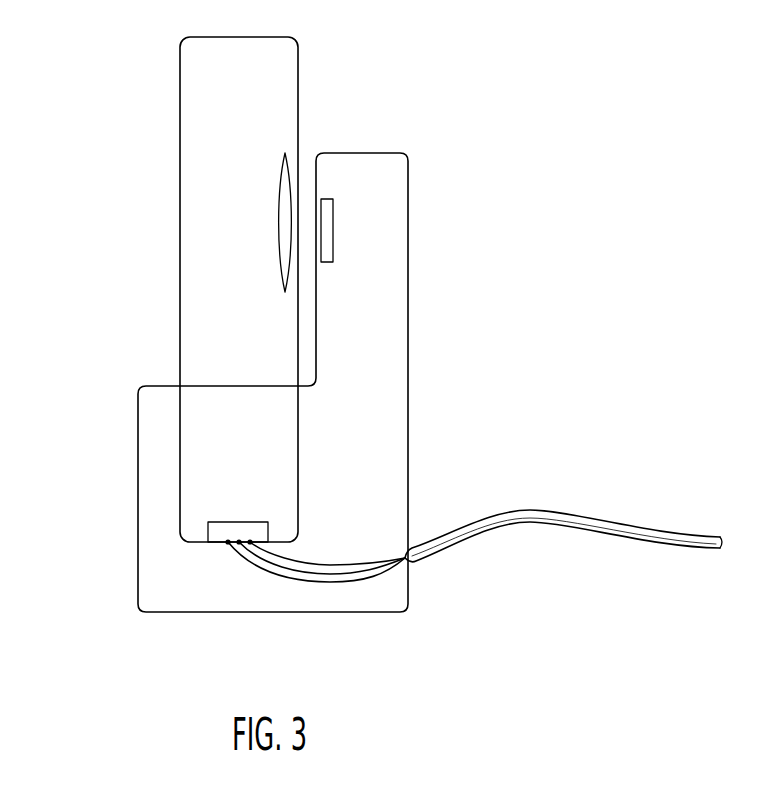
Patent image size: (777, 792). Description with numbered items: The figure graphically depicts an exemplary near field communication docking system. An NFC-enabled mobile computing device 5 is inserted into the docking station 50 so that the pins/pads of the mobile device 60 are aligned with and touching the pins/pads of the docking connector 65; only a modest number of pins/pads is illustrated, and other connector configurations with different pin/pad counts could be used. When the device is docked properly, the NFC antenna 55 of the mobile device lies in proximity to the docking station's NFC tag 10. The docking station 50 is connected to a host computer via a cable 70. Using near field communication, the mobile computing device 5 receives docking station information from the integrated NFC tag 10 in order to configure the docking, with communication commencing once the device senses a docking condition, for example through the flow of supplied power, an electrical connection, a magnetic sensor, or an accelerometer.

The NFC-enabled mobile computing device 5 is at (179, 99).
The docking station 50 is at (409, 161).
The NFC antenna 55 is at (278, 240).
The NFC tag 10 is at (333, 230).
The pins/pads of the mobile device 60 is at (226, 524).
The pins/pads of the docking connector 65 is at (229, 558).
The cable 70 is at (610, 523).